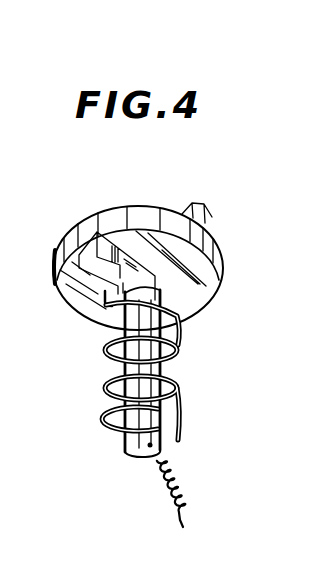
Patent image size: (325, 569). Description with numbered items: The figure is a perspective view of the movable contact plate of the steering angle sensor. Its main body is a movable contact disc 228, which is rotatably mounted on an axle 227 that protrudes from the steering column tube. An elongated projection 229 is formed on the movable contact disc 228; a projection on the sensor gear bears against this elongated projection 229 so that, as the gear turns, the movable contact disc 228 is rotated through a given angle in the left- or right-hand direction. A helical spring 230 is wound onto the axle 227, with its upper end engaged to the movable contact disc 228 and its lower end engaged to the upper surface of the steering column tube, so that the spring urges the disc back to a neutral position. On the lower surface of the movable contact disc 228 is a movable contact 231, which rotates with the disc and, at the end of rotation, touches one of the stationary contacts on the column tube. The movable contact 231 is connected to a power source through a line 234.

The movable contact disc 228 is at (140, 218).
The elongated projection 229 is at (207, 218).
The movable contact 231 is at (90, 268).
The axle 227 is at (108, 403).
The helical spring 230 is at (180, 392).
The line 234 is at (183, 527).